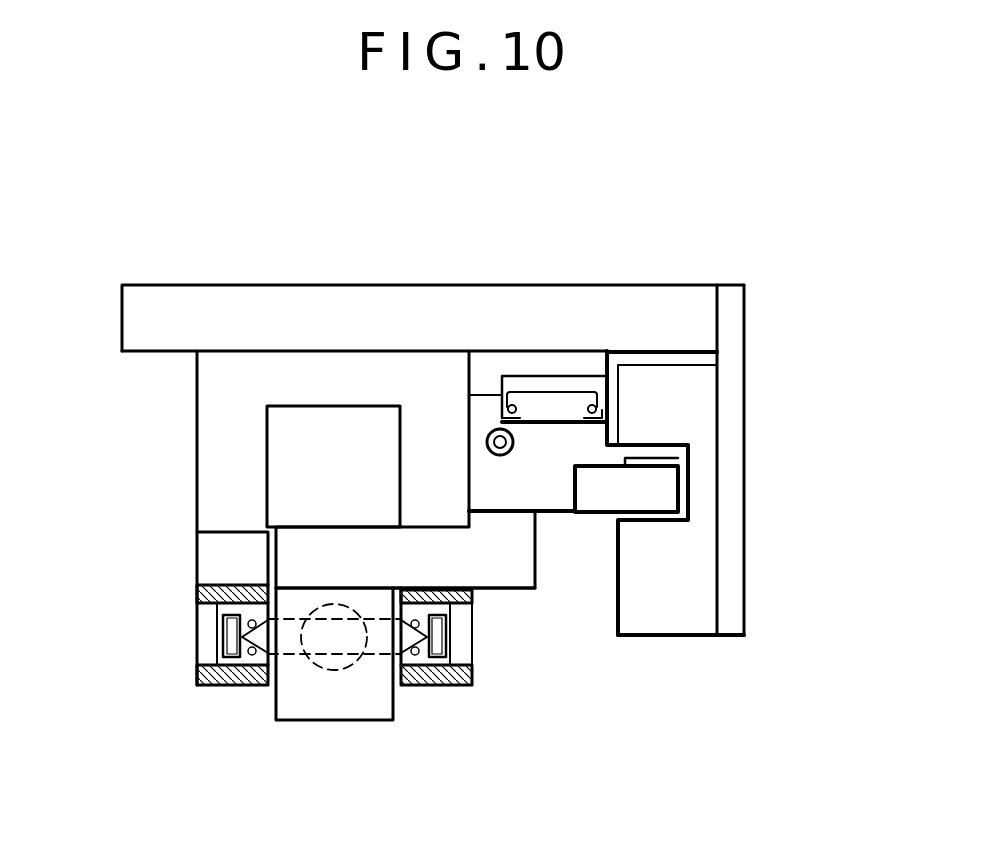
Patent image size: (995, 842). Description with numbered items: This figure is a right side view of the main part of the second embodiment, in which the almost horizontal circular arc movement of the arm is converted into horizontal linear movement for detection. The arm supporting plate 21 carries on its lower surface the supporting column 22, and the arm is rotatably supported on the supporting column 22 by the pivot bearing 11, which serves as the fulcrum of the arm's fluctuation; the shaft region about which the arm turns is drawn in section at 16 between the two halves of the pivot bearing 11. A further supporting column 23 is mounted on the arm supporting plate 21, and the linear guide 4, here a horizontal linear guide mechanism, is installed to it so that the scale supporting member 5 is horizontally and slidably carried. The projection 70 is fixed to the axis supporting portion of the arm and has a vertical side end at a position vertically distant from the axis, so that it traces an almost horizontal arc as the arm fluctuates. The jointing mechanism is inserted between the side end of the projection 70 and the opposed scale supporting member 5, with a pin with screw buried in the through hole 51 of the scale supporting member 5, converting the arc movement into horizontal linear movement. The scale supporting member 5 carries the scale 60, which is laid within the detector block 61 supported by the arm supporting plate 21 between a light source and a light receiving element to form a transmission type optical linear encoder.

The arm supporting plate 21 is at (415, 312).
The supporting column 22 is at (210, 498).
The supporting column 23 is at (537, 362).
The linear guide 4 is at (566, 408).
The through hole 51 is at (487, 430).
The scale 60 is at (660, 493).
The detector block 61 is at (680, 622).
The scale supporting member 5 is at (565, 500).
The projection 70 is at (517, 575).
The pivot bearing 11 is at (210, 686).
The shaft 16 is at (367, 708).